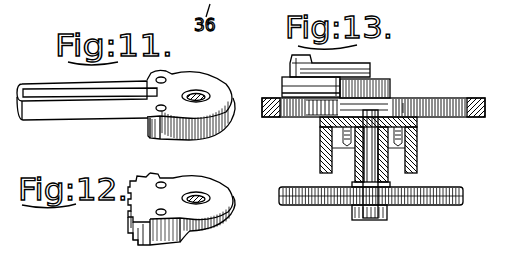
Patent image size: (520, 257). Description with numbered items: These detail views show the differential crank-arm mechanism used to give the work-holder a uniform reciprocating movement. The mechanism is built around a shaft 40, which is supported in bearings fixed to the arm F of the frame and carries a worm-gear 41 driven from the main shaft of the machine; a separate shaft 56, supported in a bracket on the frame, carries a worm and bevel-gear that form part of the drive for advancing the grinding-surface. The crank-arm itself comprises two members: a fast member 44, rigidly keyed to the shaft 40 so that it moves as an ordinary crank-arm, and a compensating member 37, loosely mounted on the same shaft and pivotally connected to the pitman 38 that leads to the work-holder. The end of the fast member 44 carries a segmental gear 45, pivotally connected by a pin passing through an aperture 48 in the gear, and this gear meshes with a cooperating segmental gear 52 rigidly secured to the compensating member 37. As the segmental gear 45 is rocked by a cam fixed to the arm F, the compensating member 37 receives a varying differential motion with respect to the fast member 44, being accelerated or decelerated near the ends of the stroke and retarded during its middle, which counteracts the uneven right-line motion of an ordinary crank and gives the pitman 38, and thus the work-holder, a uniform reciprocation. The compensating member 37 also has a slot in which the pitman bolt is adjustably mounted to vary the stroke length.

In FIG. 11, the compensating member 37 is at (48, 90).
In FIG. 13, the compensating member 37 is at (283, 80).
In FIG. 13, the pitman 38 is at (339, 71).
In FIG. 13, the shaft 40 is at (417, 168).
In FIG. 13, the worm-gear 41 is at (442, 201).
In FIG. 13, the fast member 44 is at (358, 102).
In FIG. 13, the segmental gear 45 is at (283, 93).
In FIG. 13, the aperture 48 is at (357, 157).
In FIG. 12, the cooperating segmental gear 52 is at (152, 198).
In FIG. 13, the cooperating segmental gear 52 is at (380, 90).
In FIG. 13, the shaft 56 is at (309, 114).
In FIG. 13, the arm of the frame F is at (418, 153).